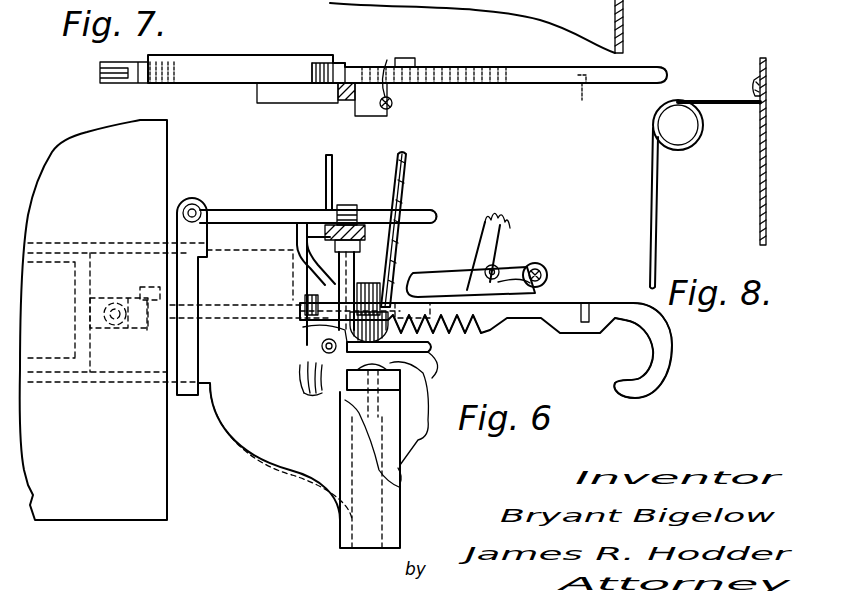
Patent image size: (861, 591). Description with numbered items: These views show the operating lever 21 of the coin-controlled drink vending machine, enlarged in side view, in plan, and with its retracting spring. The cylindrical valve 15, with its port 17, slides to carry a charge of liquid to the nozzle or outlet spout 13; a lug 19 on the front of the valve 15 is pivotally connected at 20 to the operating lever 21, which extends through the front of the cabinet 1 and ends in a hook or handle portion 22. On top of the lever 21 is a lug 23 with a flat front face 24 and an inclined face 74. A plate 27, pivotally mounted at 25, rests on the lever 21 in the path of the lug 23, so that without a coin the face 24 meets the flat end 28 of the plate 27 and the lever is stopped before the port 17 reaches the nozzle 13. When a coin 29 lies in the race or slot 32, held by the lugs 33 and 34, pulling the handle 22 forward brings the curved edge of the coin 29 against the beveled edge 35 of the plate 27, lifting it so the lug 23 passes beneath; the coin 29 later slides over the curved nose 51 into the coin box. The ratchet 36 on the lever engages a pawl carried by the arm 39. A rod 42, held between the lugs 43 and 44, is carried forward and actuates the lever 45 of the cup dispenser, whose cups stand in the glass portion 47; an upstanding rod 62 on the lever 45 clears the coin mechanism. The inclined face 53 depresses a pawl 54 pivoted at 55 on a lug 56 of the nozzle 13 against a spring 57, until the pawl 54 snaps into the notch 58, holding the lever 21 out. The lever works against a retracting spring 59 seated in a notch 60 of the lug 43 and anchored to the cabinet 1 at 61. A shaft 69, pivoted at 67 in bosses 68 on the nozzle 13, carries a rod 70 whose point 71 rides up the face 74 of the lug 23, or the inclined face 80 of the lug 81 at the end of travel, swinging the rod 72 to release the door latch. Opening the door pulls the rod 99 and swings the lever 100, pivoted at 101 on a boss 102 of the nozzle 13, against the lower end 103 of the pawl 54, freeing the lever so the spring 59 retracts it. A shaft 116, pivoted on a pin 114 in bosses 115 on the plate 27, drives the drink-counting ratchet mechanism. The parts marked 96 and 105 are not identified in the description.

In FIG. 7, the cabinet 1 is at (238, 0).
In FIG. 8, the cabinet 1 is at (760, 146).
In FIG. 6, the nozzle or outlet spout 13 is at (232, 446).
In FIG. 6, the valve 15 is at (37, 258).
In FIG. 6, the port 17 is at (66, 245).
In FIG. 6, the lug 19 is at (100, 300).
In FIG. 6, the pivot 20 is at (125, 300).
In FIG. 7, the operating lever 21 is at (541, 84).
In FIG. 6, the operating lever 21 is at (538, 310).
In FIG. 7, the hook or handle portion 22 is at (668, 68).
In FIG. 6, the hook or handle portion 22 is at (668, 352).
In FIG. 7, the lug 23 is at (346, 70).
In FIG. 6, the lug 23 is at (323, 287).
In FIG. 6, the flat front face 24 is at (385, 272).
In FIG. 6, the pivot 25 is at (548, 276).
In FIG. 6, the plate 27 is at (472, 285).
In FIG. 6, the flat end face 28 is at (412, 280).
In FIG. 6, the coin 29 is at (420, 262).
In FIG. 6, the race or slot 32 is at (432, 350).
In FIG. 7, the lug 33 is at (406, 58).
In FIG. 7, the lug 34 is at (334, 61).
In FIG. 6, the slanting or beveled edge 35 is at (405, 290).
In FIG. 7, the ratchet 36 is at (449, 75).
In FIG. 6, the ratchet 36 is at (482, 338).
In FIG. 6, the arm 39 is at (408, 165).
In FIG. 7, the rod 42 is at (346, 101).
In FIG. 6, the rod 42 is at (314, 232).
In FIG. 7, the lug 43 is at (371, 113).
In FIG. 6, the lug 43 is at (448, 330).
In FIG. 7, the lug 44 is at (312, 98).
In FIG. 6, the lug 44 is at (300, 309).
In FIG. 6, the lever 45 is at (357, 218).
In FIG. 6, the glass portion 47 is at (318, 291).
In FIG. 6, the curved nose 51 is at (434, 378).
In FIG. 6, the inclined face 53 is at (305, 330).
In FIG. 6, the pawl 54 is at (322, 348).
In FIG. 6, the pivot 55 is at (316, 372).
In FIG. 6, the lug 56 is at (300, 370).
In FIG. 6, the spring 57 is at (316, 398).
In FIG. 6, the notch 58 is at (157, 330).
In FIG. 7, the spring 59 is at (393, 103).
In FIG. 8, the spring 59 is at (656, 201).
In FIG. 7, the notch 60 is at (389, 65).
In FIG. 8, the attachment point 61 is at (752, 90).
In FIG. 6, the upstanding rod 62 is at (326, 178).
In FIG. 6, the pivot 67 is at (200, 212).
In FIG. 6, the bosses 68 is at (183, 206).
In FIG. 6, the shaft 69 is at (194, 210).
In FIG. 6, the rod 70 is at (264, 210).
In FIG. 6, the point 71 is at (317, 273).
In FIG. 6, the rod 72 is at (425, 210).
In FIG. 7, the inclined face 74 is at (312, 64).
In FIG. 6, the inclined face 74 is at (343, 297).
In FIG. 7, the inclined face 80 is at (168, 62).
In FIG. 6, the inclined face 80 is at (169, 297).
In FIG. 7, the lug 81 is at (150, 80).
In FIG. 6, the lug 81 is at (146, 297).
In FIG. 7, the pin 96 is at (582, 102).
In FIG. 6, the pin 96 is at (586, 323).
In FIG. 6, the rod 99 is at (400, 466).
In FIG. 6, the lever 100 is at (426, 440).
In FIG. 6, the pivot 101 is at (390, 365).
In FIG. 6, the boss 102 is at (401, 486).
In FIG. 6, the lower end 103 is at (327, 408).
In FIG. 7, the cover 105 is at (476, 26).
In FIG. 6, the pin 114 is at (510, 280).
In FIG. 6, the bosses 115 is at (500, 270).
In FIG. 6, the shaft 116 is at (505, 238).